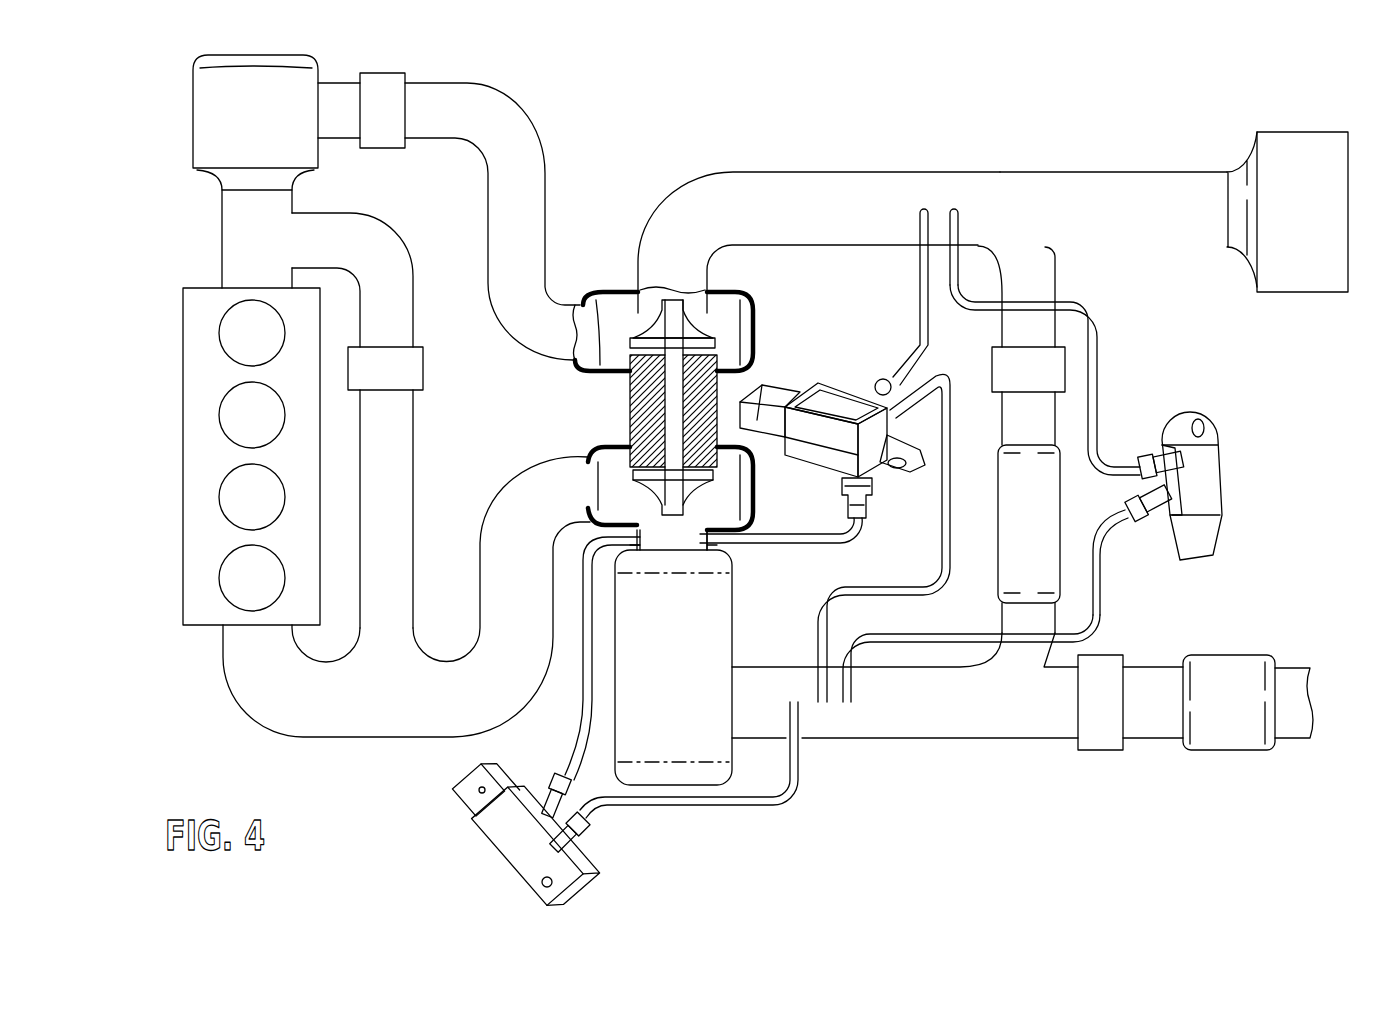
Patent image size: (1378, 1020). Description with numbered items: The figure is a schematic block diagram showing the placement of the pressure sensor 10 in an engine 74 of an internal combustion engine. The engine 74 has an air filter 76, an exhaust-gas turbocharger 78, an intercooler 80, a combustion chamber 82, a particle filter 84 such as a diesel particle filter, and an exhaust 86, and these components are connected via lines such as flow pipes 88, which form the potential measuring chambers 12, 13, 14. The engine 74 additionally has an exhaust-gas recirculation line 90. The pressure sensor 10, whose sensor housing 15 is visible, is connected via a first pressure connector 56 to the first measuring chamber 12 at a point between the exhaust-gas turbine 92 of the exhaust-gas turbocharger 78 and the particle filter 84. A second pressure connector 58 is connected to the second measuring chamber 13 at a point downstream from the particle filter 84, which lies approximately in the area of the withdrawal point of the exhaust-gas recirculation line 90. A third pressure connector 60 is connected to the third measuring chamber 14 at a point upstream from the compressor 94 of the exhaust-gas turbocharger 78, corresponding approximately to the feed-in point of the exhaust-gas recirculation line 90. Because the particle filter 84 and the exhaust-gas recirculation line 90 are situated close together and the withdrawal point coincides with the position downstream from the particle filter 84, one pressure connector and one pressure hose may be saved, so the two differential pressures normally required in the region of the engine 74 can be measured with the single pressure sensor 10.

The pressure sensor 10 is at (818, 358).
The first measuring chamber 12 is at (657, 527).
The second measuring chamber 13 is at (833, 720).
The third measuring chamber 14 is at (890, 205).
The sensor housing 15 is at (815, 455).
The first pressure connector 56 is at (797, 540).
The second pressure connector 58 is at (942, 548).
The third pressure connector 60 is at (920, 278).
The engine 74 is at (1036, 128).
The air filter 76 is at (1308, 160).
The exhaust-gas turbocharger 78 is at (598, 402).
The intercooler 80 is at (250, 120).
The combustion chamber 82 is at (243, 410).
The particle filter 84 is at (663, 760).
The exhaust 86 is at (1230, 720).
The flow pipes 88 is at (805, 200).
The exhaust-gas recirculation line 90 is at (1035, 415).
The exhaust-gas turbine 92 is at (595, 487).
The compressor 94 is at (650, 330).